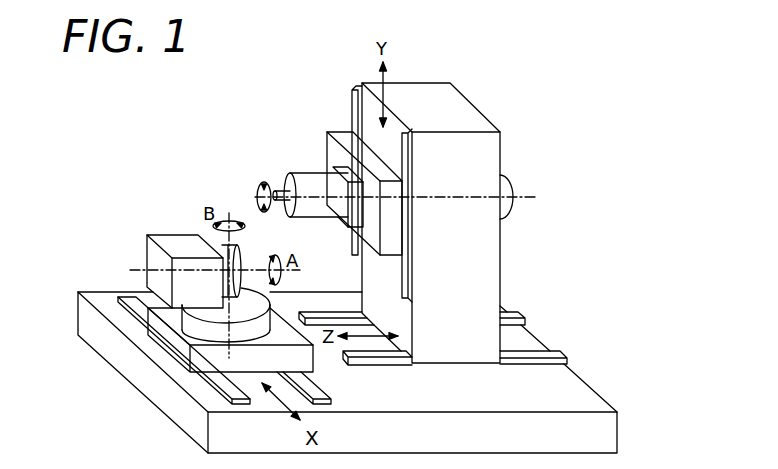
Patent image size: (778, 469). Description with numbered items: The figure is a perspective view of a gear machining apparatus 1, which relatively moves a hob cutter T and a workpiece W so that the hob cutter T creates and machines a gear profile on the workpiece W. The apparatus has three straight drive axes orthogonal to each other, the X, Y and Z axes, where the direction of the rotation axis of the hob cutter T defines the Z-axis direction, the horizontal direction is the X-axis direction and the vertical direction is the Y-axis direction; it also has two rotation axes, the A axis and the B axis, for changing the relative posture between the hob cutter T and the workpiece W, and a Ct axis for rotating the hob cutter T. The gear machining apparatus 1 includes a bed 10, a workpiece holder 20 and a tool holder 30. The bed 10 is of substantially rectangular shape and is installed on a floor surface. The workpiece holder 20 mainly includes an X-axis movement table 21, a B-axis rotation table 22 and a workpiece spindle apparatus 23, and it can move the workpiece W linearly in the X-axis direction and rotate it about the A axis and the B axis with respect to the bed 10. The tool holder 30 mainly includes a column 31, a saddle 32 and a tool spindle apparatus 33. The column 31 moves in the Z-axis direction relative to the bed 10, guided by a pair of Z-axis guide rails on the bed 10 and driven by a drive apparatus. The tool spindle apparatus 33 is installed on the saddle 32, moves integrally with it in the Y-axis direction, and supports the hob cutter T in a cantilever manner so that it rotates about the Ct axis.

The gear machining apparatus 1 is at (634, 157).
The bed 10 is at (604, 398).
The workpiece holder 20 is at (177, 258).
The X-axis movement table 21 is at (183, 360).
The B-axis rotation table 22 is at (190, 323).
The workpiece spindle apparatus 23 is at (148, 257).
The tool holder 30 is at (408, 208).
The column 31 is at (501, 263).
The saddle 32 is at (340, 132).
The tool spindle apparatus 33 is at (308, 174).
The hob cutter T is at (276, 188).
The workpiece W is at (243, 256).